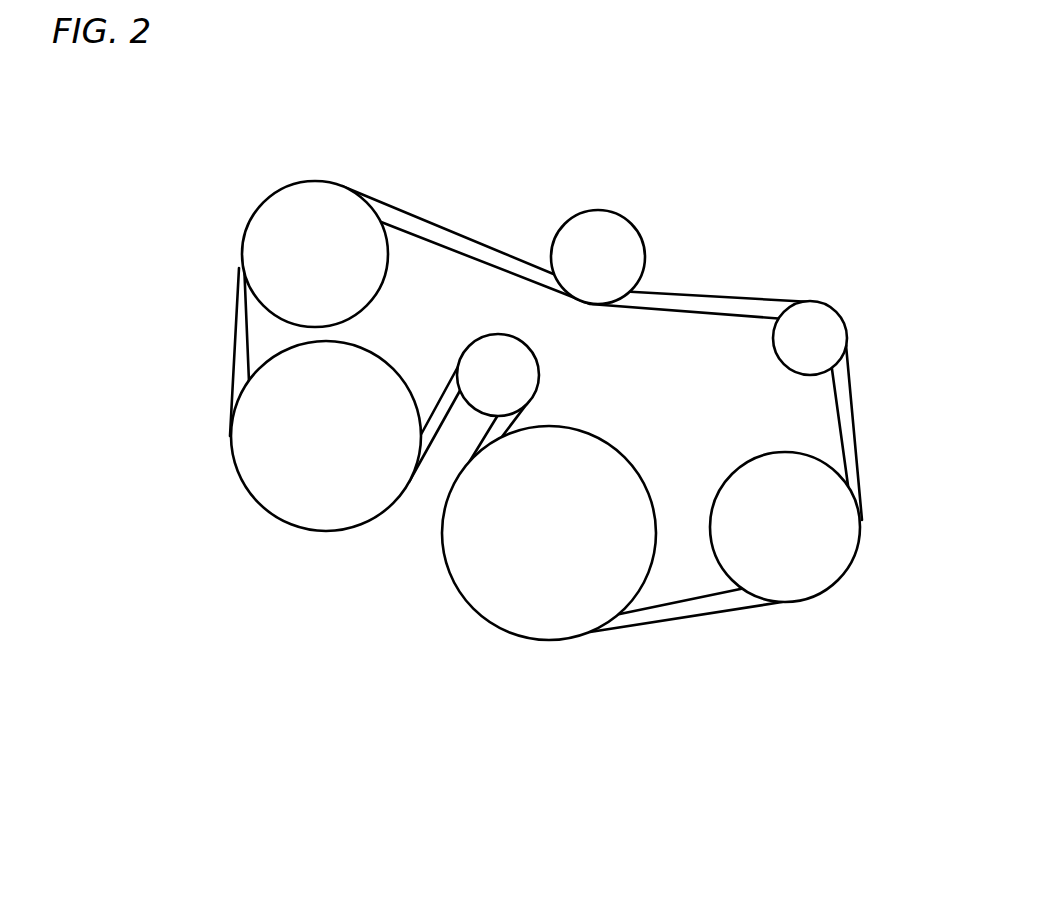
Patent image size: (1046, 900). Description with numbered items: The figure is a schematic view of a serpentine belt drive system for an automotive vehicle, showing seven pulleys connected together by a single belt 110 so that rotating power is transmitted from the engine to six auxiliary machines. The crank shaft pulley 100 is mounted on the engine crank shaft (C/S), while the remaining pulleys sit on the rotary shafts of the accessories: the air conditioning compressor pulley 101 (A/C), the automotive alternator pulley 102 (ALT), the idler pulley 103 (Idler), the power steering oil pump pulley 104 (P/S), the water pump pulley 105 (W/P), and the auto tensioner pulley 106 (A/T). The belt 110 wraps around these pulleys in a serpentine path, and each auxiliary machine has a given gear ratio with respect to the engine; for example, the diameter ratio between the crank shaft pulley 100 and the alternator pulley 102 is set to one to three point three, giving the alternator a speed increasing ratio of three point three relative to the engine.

The crank shaft pulley 100 is at (505, 602).
The air conditioning compressor pulley 101 is at (812, 577).
The automotive alternator pulley 102 is at (822, 317).
The idler pulley 103 is at (603, 218).
The power steering oil pump pulley 104 is at (302, 201).
The water pump pulley 105 is at (317, 515).
The auto tensioner pulley 106 is at (517, 355).
The belt 110 is at (712, 293).